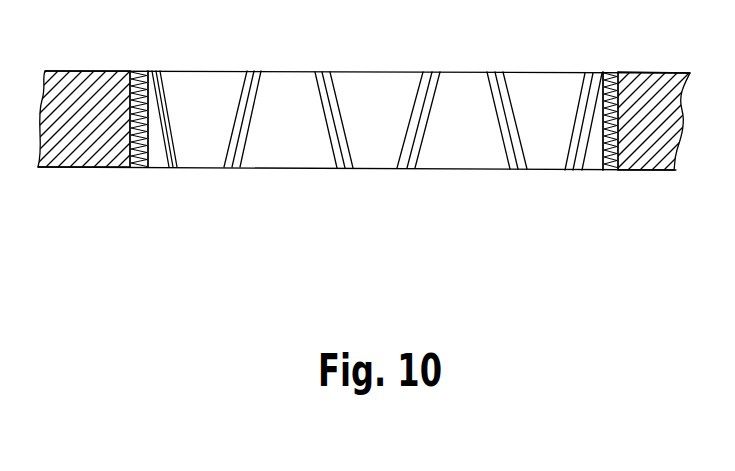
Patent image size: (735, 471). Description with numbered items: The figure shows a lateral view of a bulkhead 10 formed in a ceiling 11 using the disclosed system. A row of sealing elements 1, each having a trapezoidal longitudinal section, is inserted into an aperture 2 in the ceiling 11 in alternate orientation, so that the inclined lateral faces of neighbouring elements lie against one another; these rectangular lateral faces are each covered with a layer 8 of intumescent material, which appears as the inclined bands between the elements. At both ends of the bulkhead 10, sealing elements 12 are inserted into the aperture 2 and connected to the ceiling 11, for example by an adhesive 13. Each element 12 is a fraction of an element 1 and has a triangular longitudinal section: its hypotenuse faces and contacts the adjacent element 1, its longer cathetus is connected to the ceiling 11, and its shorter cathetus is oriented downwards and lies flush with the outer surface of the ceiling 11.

The bulkhead 10 is at (242, 210).
The sealing element 1 is at (195, 103).
The layer of intumescent material 8 is at (243, 108).
The ceiling 11 is at (73, 152).
The aperture 2 is at (620, 190).
The sealing element (end element) 12 is at (164, 156).
The adhesive 13 is at (132, 153).